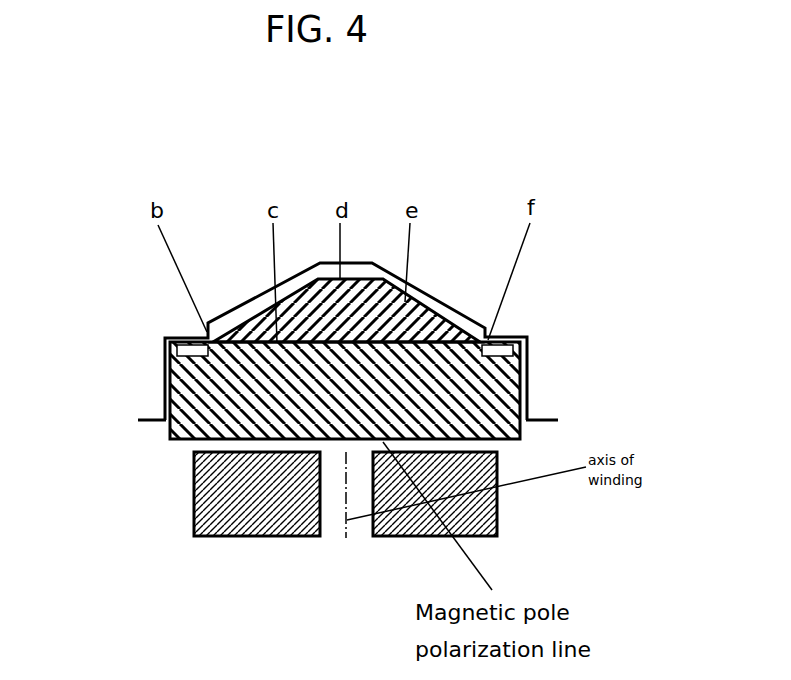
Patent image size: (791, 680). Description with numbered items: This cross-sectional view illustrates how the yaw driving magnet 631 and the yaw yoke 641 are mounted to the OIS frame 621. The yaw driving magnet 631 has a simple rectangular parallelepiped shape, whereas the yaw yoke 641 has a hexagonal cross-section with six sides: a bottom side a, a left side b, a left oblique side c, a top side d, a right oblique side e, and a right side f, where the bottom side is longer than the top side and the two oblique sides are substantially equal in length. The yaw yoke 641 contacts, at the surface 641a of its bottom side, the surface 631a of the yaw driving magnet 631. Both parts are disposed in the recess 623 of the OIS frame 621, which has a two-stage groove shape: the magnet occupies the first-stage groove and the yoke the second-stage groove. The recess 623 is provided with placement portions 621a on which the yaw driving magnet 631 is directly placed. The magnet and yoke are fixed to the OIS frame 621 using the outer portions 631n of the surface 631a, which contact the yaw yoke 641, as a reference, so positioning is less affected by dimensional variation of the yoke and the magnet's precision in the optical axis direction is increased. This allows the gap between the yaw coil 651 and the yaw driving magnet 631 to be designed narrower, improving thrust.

The OIS frame 621 is at (212, 273).
The placement portions 621a is at (195, 347).
The recess 623 is at (363, 272).
The yaw driving magnet 631 is at (453, 302).
The surface of yaw driving magnet 631a is at (252, 343).
The outer portions 631n is at (180, 387).
The yaw yoke 641 is at (423, 387).
The surface of bottom side 641a is at (277, 343).
The yaw coil 651 is at (395, 505).